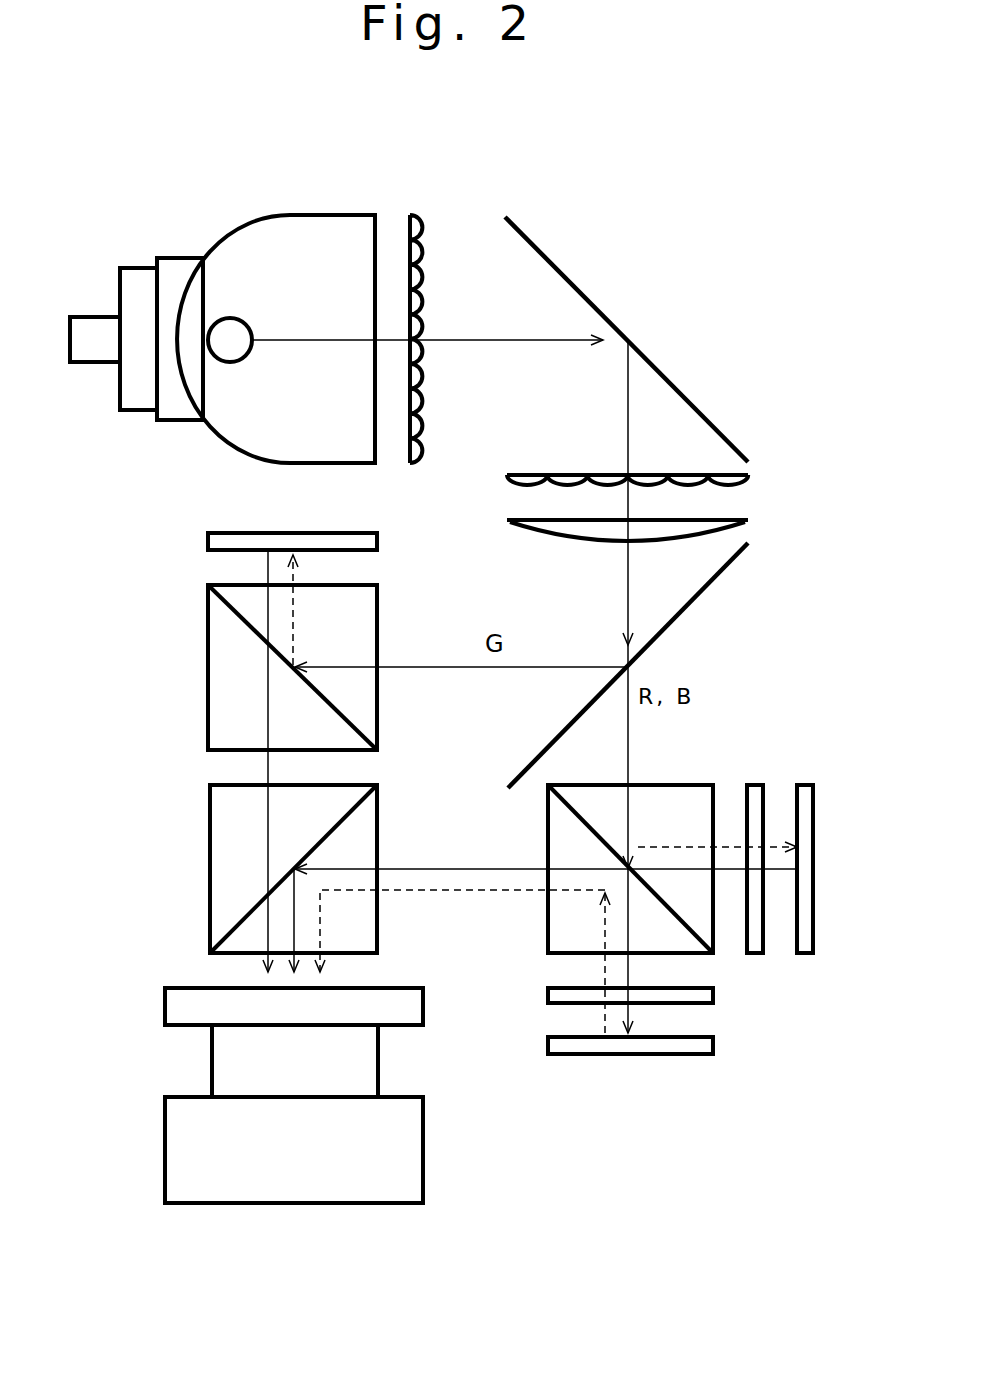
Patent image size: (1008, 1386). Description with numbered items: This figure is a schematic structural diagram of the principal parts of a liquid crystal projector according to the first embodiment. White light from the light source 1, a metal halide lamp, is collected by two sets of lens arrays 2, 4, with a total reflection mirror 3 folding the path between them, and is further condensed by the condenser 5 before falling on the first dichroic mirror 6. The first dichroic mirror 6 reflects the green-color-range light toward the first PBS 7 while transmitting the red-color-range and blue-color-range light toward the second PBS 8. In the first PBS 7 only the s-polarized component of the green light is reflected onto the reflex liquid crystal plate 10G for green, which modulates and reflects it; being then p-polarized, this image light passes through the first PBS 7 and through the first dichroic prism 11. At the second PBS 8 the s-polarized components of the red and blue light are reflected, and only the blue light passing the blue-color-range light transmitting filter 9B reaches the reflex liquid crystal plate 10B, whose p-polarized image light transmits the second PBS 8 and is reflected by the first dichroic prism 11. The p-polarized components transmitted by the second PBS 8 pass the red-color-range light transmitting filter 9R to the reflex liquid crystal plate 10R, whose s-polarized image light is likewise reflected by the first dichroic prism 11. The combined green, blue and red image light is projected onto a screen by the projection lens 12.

The light source 1 is at (277, 242).
The lens array 2 is at (421, 233).
The total reflection mirror 3 is at (572, 280).
The lens array 4 is at (507, 475).
The condenser 5 is at (567, 528).
The first dichroic mirror 6 is at (683, 615).
The first PBS 7 is at (232, 622).
The second PBS 8 is at (572, 828).
The blue-color-range light transmitting filter 9B is at (757, 805).
The red-color-range light transmitting filter 9R is at (700, 997).
The reflex liquid crystal plate for green color range 10G is at (222, 540).
The reflex liquid crystal plate for blue color range 10B is at (808, 800).
The reflex liquid crystal plate for red color range 10R is at (700, 1048).
The first dichroic prism 11 is at (240, 815).
The projection lens 12 is at (193, 1140).